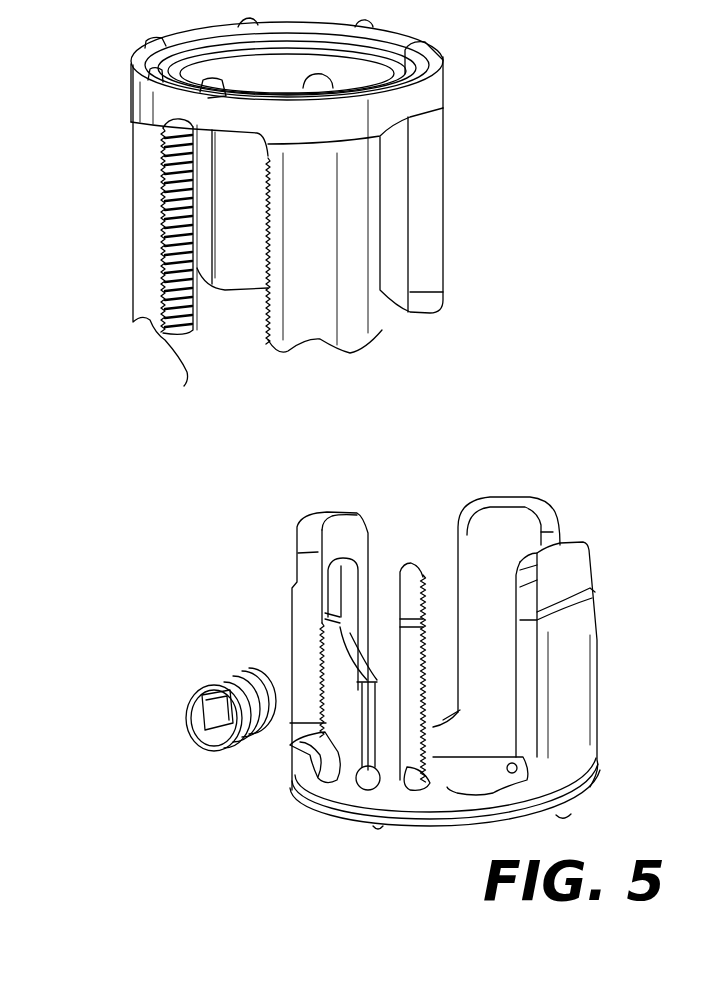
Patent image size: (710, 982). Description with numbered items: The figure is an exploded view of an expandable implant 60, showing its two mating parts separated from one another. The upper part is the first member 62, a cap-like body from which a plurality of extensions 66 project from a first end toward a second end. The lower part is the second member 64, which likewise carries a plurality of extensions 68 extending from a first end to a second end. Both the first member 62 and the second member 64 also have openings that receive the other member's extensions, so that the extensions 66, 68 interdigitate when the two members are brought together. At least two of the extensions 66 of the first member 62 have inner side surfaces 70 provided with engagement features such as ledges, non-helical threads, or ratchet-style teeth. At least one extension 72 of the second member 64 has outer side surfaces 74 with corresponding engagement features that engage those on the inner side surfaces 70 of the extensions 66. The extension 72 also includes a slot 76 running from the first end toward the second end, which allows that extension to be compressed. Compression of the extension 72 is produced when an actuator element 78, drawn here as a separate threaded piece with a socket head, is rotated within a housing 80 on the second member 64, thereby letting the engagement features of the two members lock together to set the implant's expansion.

The implant 60 is at (543, 120).
The first member 62 is at (443, 87).
The second member 64 is at (600, 644).
The extensions 66 is at (141, 223).
The extensions 68 is at (290, 620).
The inner side surfaces 70 is at (263, 318).
The extension 72 is at (295, 748).
The outer side surfaces 74 is at (443, 760).
The slot 76 is at (365, 768).
The actuator element 78 is at (210, 680).
The housing 80 is at (387, 648).